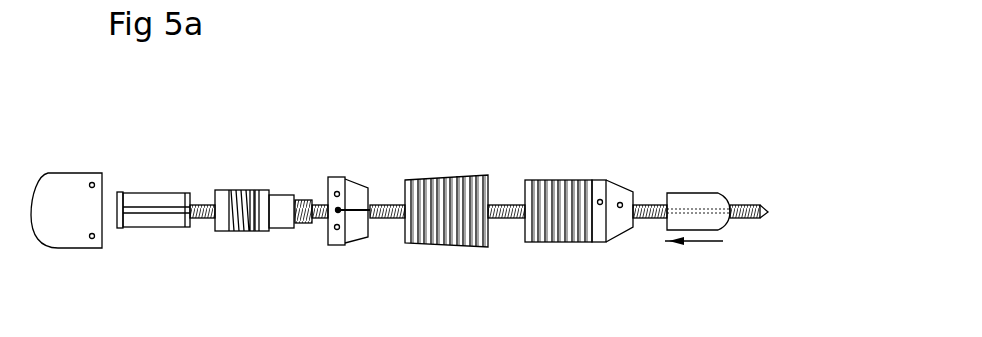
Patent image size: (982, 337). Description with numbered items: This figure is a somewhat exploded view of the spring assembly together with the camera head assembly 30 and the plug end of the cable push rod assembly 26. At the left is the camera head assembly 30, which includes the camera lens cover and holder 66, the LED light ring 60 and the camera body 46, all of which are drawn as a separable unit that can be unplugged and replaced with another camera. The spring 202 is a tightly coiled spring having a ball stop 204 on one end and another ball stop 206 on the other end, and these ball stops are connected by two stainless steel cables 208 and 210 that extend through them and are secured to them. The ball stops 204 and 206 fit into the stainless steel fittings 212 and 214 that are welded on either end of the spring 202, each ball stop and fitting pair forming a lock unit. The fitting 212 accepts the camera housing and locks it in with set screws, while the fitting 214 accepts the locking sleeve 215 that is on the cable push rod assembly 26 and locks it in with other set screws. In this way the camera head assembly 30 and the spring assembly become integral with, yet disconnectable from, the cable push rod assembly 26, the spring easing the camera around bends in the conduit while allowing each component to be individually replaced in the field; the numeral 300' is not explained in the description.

The camera head assembly 30 is at (280, 181).
The camera lens cover and holder 66 is at (80, 250).
The LED light ring 60 is at (122, 231).
The stainless steel cable 208 is at (137, 204).
The camera body 46 is at (148, 194).
The tensioning device 300' is at (463, 199).
The stainless steel cable 210 is at (158, 216).
The stainless steel fitting 212 is at (333, 244).
The ball stop 204 is at (355, 240).
The spring 202 is at (547, 244).
The stainless steel fitting 214 is at (600, 243).
The ball stop 206 is at (620, 232).
The cable push rod assembly 26 is at (651, 203).
The locking sleeve 215 is at (705, 192).